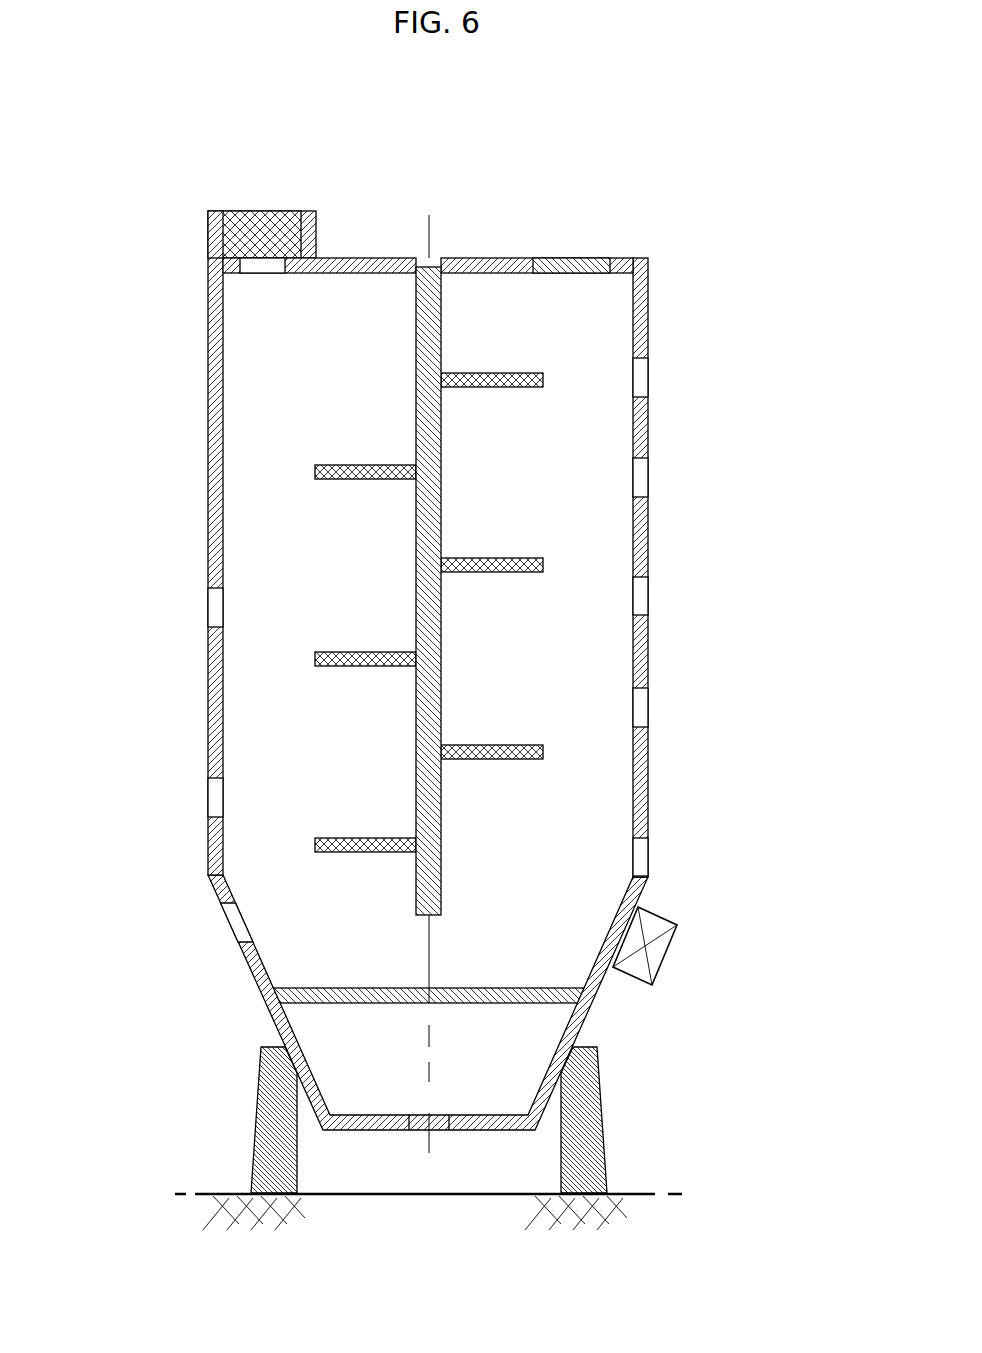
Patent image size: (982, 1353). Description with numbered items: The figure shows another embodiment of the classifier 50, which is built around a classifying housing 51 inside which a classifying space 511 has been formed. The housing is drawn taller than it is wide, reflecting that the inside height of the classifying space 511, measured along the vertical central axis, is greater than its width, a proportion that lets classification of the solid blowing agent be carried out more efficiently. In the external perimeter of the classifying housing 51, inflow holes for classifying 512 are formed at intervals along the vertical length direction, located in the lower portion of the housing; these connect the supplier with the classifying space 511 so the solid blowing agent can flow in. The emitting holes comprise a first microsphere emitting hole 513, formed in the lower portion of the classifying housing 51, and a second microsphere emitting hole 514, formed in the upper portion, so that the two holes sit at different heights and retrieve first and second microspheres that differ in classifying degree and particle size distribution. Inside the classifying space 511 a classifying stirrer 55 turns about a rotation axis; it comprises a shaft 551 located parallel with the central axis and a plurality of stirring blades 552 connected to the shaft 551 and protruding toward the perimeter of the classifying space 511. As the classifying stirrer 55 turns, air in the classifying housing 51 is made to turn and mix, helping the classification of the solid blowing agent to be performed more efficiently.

The classifier 50 is at (371, 165).
The classifying housing 51 is at (208, 685).
The classifying space 511 is at (532, 655).
The inflow holes for classifying 512 is at (225, 923).
The first microsphere emitting hole 513 is at (642, 715).
The second microsphere emitting hole 514 is at (643, 475).
The classifying stirrer 55 is at (133, 352).
The shaft 551 is at (418, 382).
The stirring blades 552 is at (330, 482).